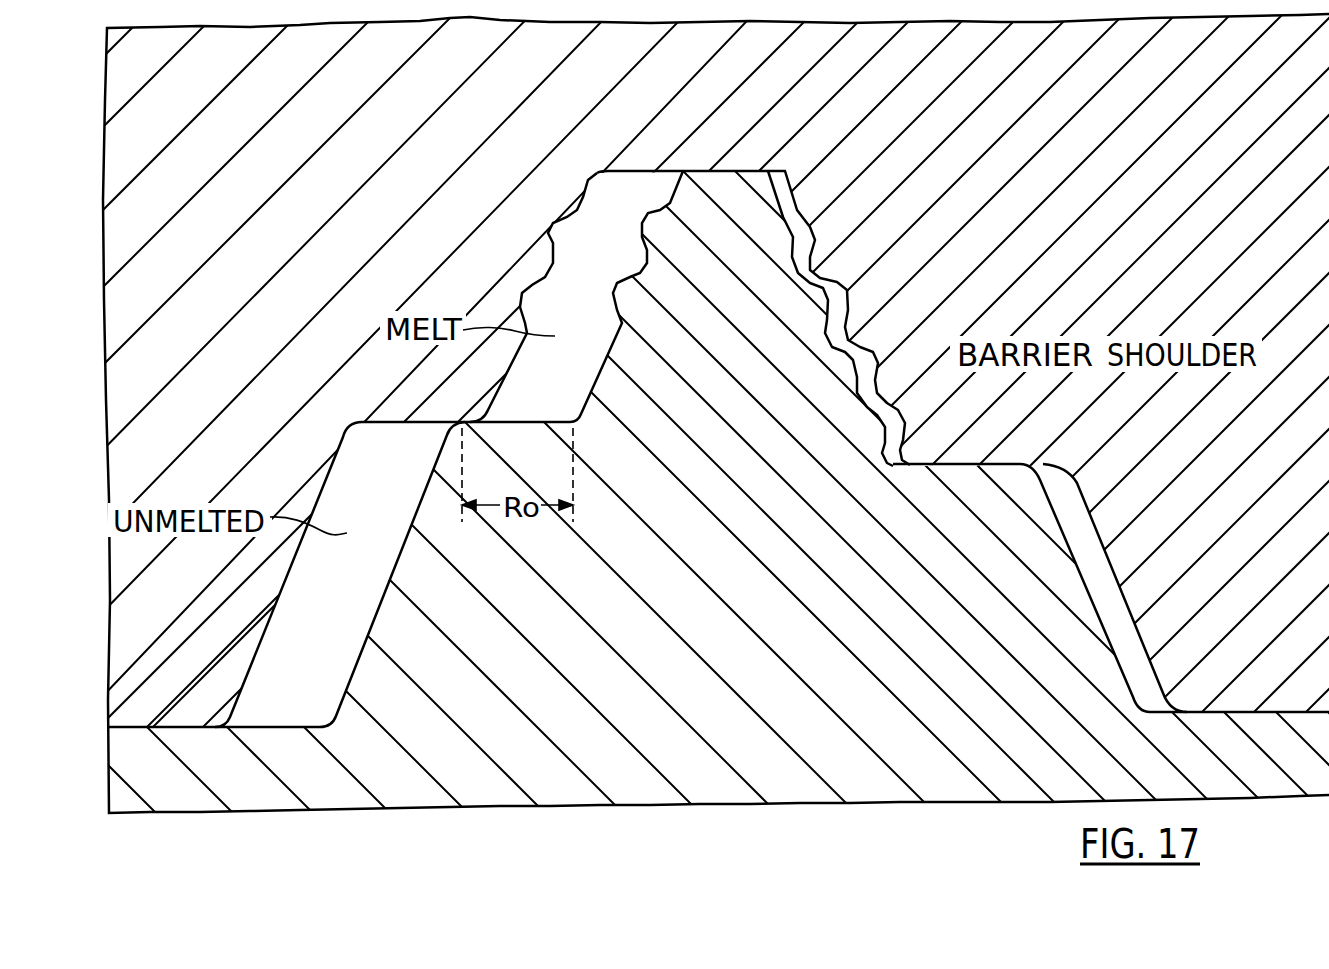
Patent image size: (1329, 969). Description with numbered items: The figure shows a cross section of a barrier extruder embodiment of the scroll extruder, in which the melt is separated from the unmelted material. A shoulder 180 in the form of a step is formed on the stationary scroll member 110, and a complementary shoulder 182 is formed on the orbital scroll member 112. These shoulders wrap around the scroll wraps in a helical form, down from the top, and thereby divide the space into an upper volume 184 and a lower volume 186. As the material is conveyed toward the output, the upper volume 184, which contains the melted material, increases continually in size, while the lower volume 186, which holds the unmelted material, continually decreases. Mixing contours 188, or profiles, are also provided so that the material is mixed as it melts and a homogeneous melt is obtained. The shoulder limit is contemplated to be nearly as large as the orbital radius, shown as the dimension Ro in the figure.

The stationary scroll member 110 is at (664, 484).
The orbital scroll member 112 is at (664, 457).
The shoulder 180 is at (535, 423).
The complementary shoulder 182 is at (413, 423).
The upper volume 184 is at (600, 296).
The lower volume 186 is at (286, 574).
The mixing contours 188 is at (827, 348).